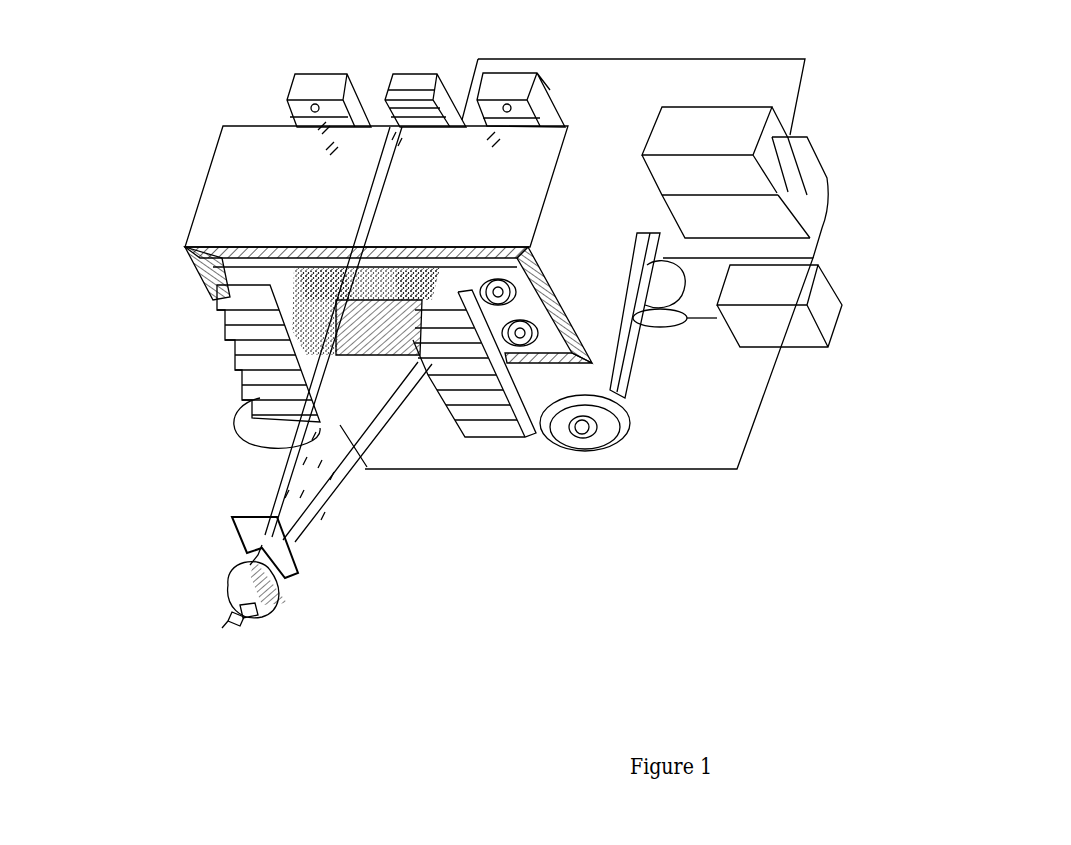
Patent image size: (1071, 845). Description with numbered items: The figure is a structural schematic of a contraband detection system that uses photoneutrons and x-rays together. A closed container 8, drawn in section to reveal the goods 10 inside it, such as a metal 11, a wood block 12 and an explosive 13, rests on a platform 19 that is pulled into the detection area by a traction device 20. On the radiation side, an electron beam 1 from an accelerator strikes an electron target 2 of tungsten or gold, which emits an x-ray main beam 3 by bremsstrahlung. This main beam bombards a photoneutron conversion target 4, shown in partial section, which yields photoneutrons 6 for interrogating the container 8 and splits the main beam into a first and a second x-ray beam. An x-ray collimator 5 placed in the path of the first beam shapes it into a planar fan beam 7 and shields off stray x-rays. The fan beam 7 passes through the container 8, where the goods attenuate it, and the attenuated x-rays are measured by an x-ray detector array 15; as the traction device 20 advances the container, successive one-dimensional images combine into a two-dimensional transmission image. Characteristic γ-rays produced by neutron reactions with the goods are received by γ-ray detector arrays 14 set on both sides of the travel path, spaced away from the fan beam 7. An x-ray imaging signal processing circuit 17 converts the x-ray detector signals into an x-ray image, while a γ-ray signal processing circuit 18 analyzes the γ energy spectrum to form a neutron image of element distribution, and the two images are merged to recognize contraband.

The electron beam 1 is at (236, 627).
The electron target 2 is at (252, 603).
The x-ray main beam 3 is at (252, 607).
The photoneutron conversion target 4 is at (250, 560).
The x-ray collimator 5 is at (287, 577).
The photoneutrons 6 is at (315, 533).
The x-ray fan beam 7 is at (335, 470).
The container 8 is at (205, 270).
The goods 10 is at (235, 278).
The metal 11 is at (266, 245).
The wood block 12 is at (335, 290).
The explosive 13 is at (390, 270).
The γ-ray detector array 14 is at (333, 83).
The x-ray detector array 15 is at (417, 83).
The x-ray imaging signal processing circuit 17 is at (676, 126).
The γ-ray signal processing circuit 18 is at (807, 170).
The platform 19 is at (613, 328).
The traction device 20 is at (807, 338).